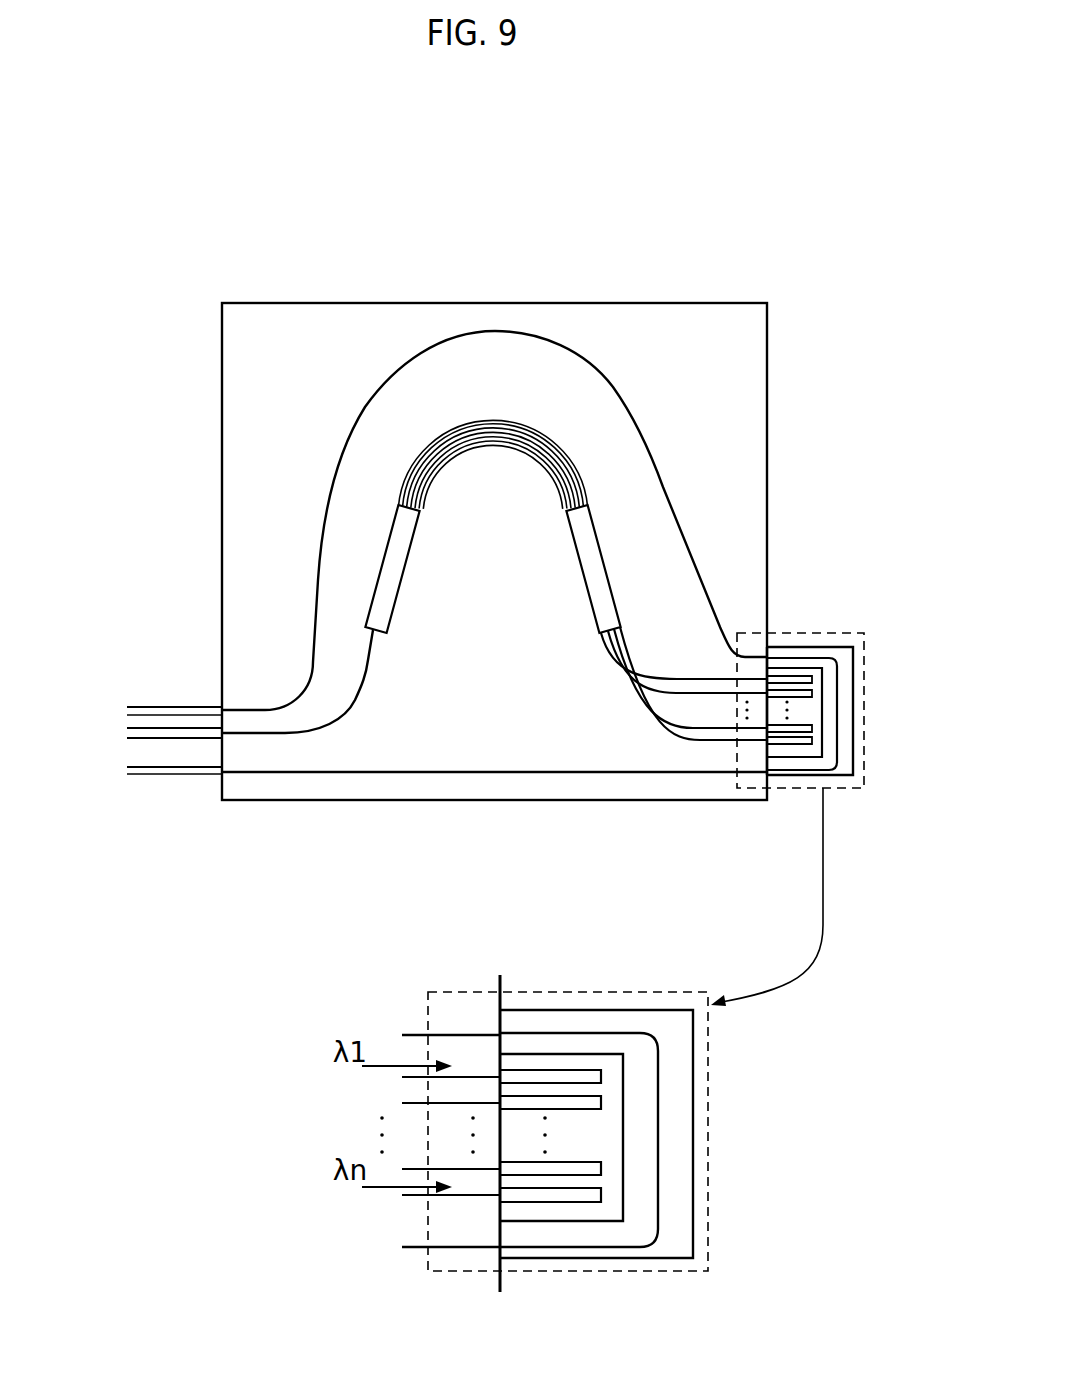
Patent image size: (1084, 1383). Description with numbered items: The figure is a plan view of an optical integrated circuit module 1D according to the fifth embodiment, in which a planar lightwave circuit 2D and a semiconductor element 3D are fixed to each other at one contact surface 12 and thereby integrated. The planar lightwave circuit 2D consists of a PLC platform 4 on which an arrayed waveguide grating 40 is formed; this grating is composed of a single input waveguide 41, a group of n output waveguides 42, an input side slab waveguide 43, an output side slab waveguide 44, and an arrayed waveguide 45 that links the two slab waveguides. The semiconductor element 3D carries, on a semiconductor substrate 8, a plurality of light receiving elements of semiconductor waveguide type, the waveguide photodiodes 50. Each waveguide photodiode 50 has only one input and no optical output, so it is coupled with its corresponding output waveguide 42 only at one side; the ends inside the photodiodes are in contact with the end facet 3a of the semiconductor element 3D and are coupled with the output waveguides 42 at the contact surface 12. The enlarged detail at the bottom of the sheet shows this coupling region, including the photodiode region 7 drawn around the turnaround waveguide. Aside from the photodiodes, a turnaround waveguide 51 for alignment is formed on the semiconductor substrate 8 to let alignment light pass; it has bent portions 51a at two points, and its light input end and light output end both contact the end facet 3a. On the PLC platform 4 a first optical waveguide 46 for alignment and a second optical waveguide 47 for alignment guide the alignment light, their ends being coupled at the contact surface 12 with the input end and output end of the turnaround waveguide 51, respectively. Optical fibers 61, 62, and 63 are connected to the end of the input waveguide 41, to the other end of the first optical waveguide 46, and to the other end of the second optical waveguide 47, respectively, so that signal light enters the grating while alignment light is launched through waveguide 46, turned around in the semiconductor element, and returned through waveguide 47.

The optical integrated circuit module 1D is at (822, 288).
The planar lightwave circuit 2D is at (318, 302).
The semiconductor element 3D is at (845, 640).
The end facet 3a is at (500, 1250).
The PLC platform 4 is at (222, 368).
The photoelectric conversion element 7 is at (853, 722).
The semiconductor substrate 8 is at (798, 670).
The contact surface 12 is at (768, 645).
The arrayed waveguide grating 40 is at (497, 420).
The input waveguide 41 is at (245, 733).
The output waveguides 42 is at (753, 679).
The input side slab waveguide 43 is at (412, 542).
The output side slab waveguide 44 is at (588, 592).
The arrayed waveguide 45 is at (538, 433).
The first optical waveguide for alignment 46 is at (355, 415).
The second optical waveguide for alignment 47 is at (305, 773).
The waveguide photodiodes 50 is at (602, 1077).
The turnaround waveguide for alignment 51 is at (840, 688).
The bent portions 51a is at (862, 660).
The optical fiber 61 is at (133, 728).
The optical fiber 62 is at (153, 707).
The optical fiber 63 is at (153, 778).